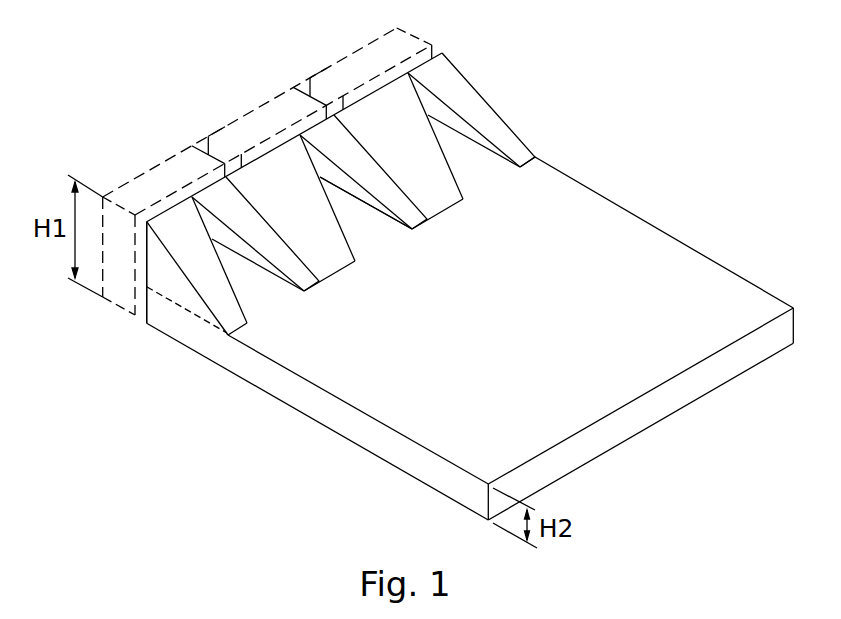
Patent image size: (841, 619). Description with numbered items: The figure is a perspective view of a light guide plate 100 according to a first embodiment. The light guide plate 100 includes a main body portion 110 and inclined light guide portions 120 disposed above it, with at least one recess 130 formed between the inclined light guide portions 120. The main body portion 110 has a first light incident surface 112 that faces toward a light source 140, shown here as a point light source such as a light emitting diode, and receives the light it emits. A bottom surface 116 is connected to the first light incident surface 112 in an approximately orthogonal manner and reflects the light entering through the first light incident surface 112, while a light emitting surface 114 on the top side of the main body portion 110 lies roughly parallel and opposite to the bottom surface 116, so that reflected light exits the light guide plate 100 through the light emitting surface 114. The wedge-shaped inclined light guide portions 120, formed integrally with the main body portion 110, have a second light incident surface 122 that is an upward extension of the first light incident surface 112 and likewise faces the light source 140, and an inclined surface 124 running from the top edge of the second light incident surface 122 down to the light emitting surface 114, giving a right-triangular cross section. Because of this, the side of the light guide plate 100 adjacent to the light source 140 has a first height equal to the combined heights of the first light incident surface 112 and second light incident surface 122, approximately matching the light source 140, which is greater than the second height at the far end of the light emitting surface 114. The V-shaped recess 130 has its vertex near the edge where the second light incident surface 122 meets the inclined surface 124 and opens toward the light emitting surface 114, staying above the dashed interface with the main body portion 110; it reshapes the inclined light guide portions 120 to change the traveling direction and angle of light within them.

The light guide plate 100 is at (741, 45).
The main body portion 110 is at (760, 268).
The first light incident surface 112 is at (146, 295).
The light emitting surface 114 is at (638, 258).
The bottom surface 116 is at (262, 404).
The inclined light guide portion 120 is at (507, 98).
The second light incident surface 122 is at (146, 253).
The inclined surface 124 is at (413, 202).
The recess 130 is at (342, 177).
The light source 140 is at (178, 165).